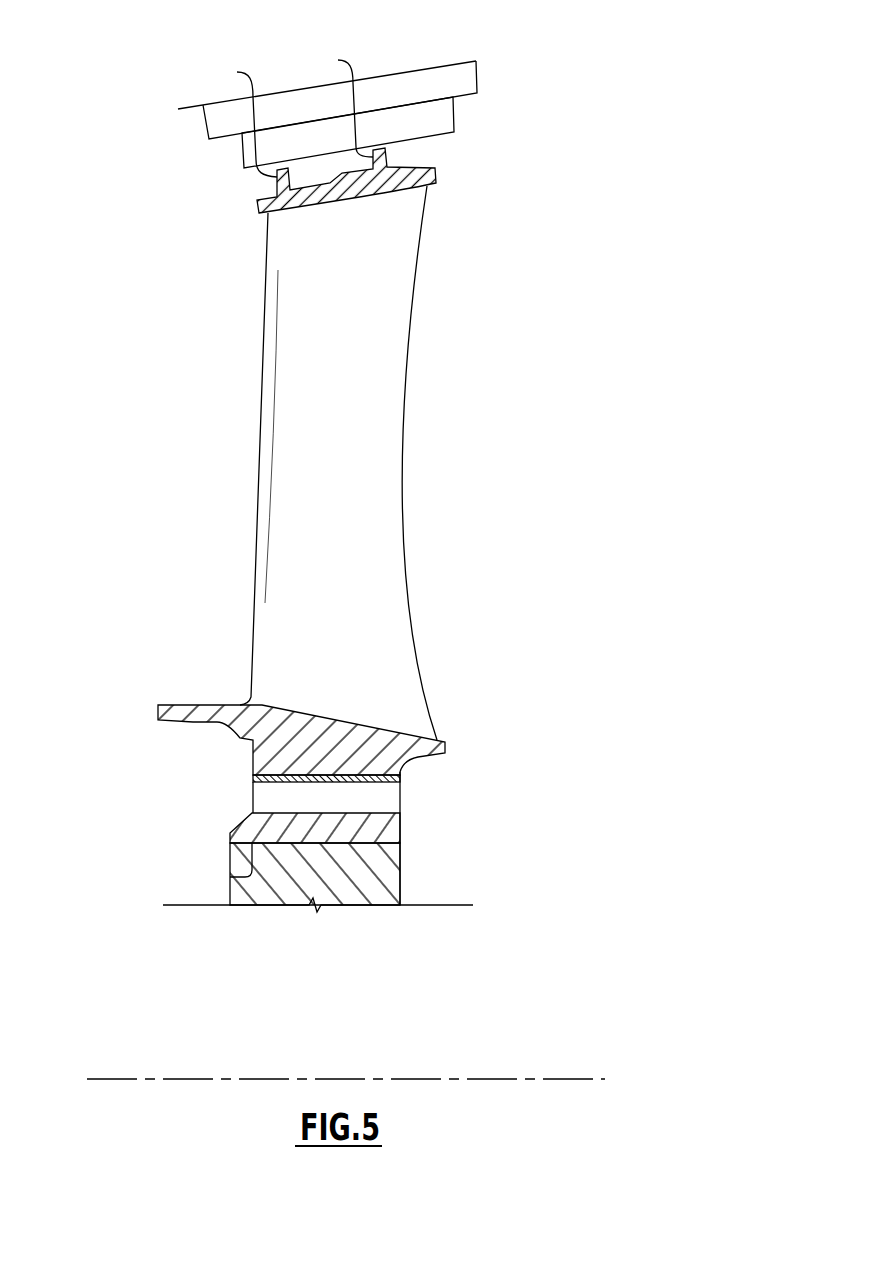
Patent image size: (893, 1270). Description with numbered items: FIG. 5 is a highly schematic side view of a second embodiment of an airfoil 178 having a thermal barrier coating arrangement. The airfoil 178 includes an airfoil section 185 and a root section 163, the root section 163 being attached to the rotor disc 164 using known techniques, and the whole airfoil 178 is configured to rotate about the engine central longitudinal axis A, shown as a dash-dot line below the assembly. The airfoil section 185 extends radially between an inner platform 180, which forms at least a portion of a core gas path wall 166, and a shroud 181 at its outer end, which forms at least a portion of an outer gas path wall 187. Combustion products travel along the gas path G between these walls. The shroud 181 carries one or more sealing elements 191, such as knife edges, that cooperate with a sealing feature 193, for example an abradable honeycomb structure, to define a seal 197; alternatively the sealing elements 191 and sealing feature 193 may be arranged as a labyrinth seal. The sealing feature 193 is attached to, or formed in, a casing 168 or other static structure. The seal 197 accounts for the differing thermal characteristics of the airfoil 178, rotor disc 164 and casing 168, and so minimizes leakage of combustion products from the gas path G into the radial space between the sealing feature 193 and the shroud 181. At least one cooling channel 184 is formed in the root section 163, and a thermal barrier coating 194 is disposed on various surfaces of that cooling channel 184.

The casing 168 is at (442, 60).
The sealing feature 193 is at (453, 118).
The sealing elements 191 is at (285, 110).
The shroud 181 is at (257, 207).
The seal 197 is at (470, 160).
The airfoil 178 is at (607, 160).
The outer gas path wall 187 is at (286, 226).
The airfoil section 185 is at (257, 430).
The gas path G is at (320, 483).
The core gas path wall 166 is at (193, 690).
The inner platform 180 is at (143, 717).
The cooling channel 184 is at (366, 782).
The thermal barrier coating 194 is at (275, 782).
The root section 163 is at (400, 829).
The rotor disc 164 is at (400, 876).
The engine central longitudinal axis A is at (582, 1079).